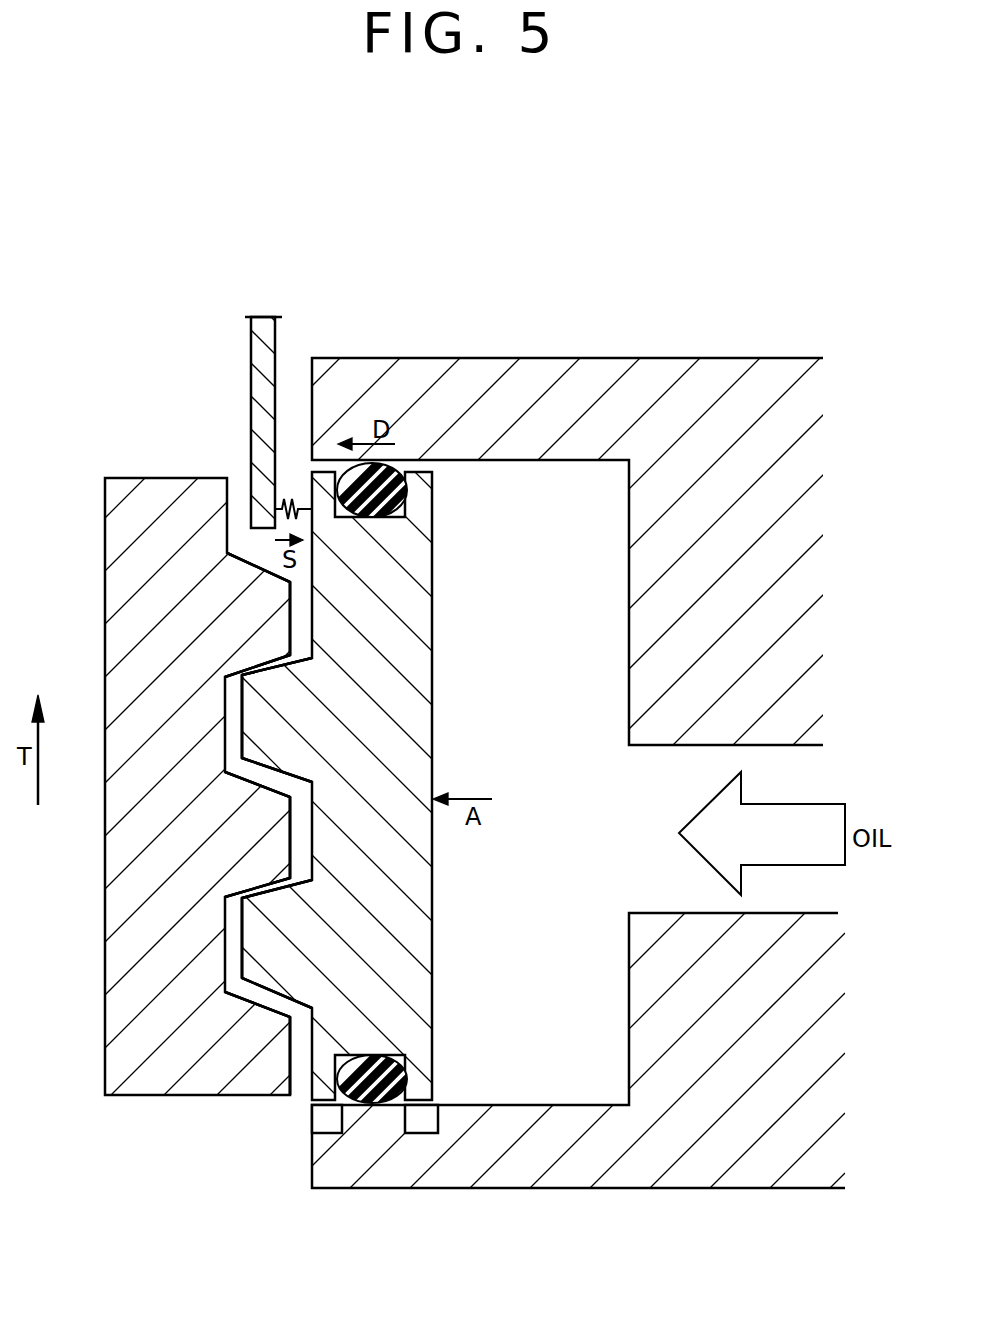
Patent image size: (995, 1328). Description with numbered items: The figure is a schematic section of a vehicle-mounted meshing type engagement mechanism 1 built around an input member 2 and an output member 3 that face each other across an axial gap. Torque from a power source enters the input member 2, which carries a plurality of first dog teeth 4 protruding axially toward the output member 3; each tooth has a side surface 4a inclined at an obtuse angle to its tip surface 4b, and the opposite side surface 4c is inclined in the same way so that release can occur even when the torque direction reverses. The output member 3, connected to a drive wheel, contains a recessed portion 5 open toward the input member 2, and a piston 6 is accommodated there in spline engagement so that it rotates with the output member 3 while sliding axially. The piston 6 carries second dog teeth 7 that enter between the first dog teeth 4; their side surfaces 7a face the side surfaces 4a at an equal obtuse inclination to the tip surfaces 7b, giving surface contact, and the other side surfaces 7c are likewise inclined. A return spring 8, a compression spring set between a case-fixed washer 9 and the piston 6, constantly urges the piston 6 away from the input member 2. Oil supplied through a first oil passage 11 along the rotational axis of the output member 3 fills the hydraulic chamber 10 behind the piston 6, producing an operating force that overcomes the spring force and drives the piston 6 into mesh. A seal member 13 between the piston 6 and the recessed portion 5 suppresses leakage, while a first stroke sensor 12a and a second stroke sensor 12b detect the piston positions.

The meshing type engagement mechanism 1 is at (527, 222).
The input member 2 is at (115, 733).
The output member 3 is at (713, 377).
The first dog teeth 4 is at (290, 612).
The side surfaces of the first dog teeth 4a is at (263, 560).
The tip surfaces of the first dog teeth 4b is at (290, 635).
The side surfaces on the other sides of the first dog teeth 4c is at (267, 667).
The recessed portion 5 is at (477, 493).
The piston 6 is at (432, 634).
The second dog teeth 7 is at (247, 735).
The side surfaces of the second dog teeth 7a is at (307, 780).
The tip surfaces of the second dog teeth 7b is at (237, 703).
The side surfaces on the other sides of the second dog teeth 7c is at (317, 660).
The return spring 8 is at (291, 497).
The washer 9 is at (255, 378).
The hydraulic chamber 10 is at (547, 746).
The first oil passage 11 is at (695, 892).
The first stroke sensor 12a is at (328, 1123).
The second stroke sensor 12b is at (423, 1123).
The seal member 13 is at (373, 1080).